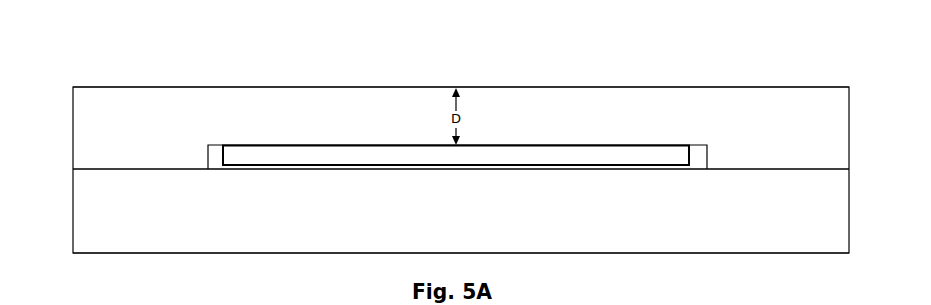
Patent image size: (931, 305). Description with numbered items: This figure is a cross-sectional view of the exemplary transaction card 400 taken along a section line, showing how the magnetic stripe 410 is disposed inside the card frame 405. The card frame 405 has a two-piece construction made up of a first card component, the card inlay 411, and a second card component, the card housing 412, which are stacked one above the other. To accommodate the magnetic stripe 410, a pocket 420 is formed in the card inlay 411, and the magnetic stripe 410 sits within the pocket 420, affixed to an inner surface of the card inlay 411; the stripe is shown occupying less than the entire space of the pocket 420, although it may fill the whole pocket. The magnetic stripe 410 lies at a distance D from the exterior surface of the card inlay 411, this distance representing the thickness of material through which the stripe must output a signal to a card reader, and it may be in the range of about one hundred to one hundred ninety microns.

The transaction card 400 is at (438, 30).
The card frame 405 is at (64, 175).
The magnetic stripe 410 is at (322, 156).
The card inlay 411 is at (130, 120).
The card housing 412 is at (130, 212).
The pocket 420 is at (218, 148).